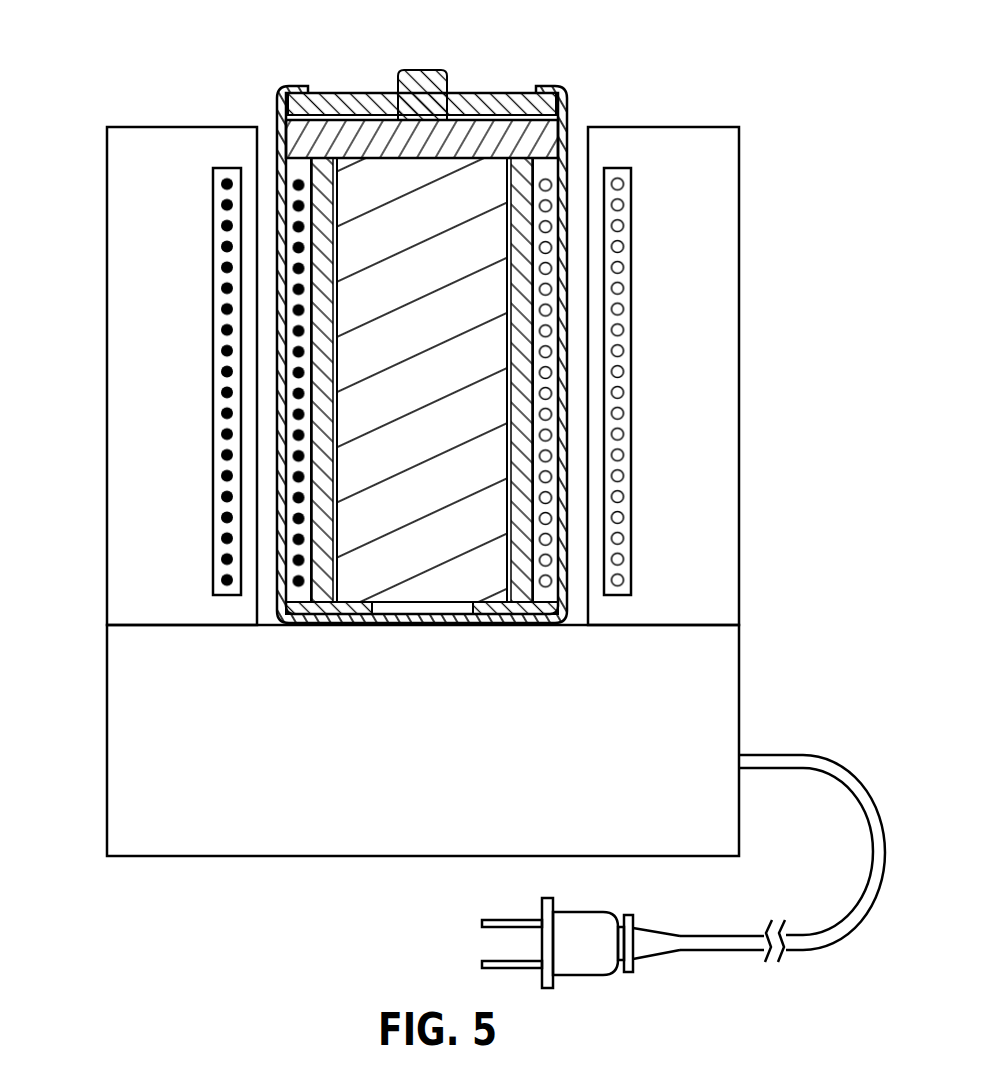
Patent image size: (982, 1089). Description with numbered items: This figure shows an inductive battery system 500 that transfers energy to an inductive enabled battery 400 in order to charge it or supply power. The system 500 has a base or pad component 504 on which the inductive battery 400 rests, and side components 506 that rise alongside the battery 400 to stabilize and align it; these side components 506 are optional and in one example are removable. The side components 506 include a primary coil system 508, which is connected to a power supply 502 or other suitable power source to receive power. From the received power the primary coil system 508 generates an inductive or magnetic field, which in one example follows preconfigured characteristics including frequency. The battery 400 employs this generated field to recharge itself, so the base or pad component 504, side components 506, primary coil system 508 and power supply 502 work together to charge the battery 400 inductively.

The inductive battery system 500 is at (72, 838).
The power supply 502 is at (587, 963).
The base or pad component 504 is at (712, 700).
The side component 506 is at (710, 440).
The primary coil system 508 is at (614, 184).
The inductive battery 400 is at (571, 93).